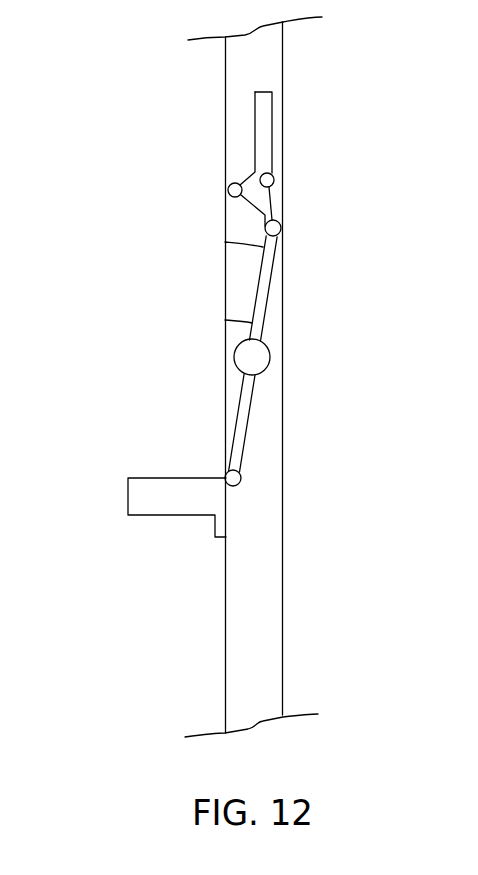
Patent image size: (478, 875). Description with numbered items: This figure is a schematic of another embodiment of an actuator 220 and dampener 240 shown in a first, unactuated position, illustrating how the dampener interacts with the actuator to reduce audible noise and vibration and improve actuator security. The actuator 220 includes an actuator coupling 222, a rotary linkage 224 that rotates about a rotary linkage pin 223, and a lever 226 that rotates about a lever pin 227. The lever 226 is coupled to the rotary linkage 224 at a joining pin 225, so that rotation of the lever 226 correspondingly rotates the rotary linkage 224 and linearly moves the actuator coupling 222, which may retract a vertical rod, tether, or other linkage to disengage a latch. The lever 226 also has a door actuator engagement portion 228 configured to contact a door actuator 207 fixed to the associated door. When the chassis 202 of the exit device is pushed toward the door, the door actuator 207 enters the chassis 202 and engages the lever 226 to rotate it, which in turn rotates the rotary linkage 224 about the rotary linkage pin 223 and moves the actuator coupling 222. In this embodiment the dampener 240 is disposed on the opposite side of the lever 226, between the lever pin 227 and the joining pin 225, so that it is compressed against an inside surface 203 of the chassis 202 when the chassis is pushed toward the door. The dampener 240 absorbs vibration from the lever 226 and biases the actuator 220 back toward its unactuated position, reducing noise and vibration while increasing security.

The chassis 202 is at (257, 675).
The inside surface 203 is at (226, 610).
The door actuator 207 is at (140, 497).
The actuator 220 is at (342, 472).
The actuator coupling 222 is at (265, 110).
The rotary linkage pin 223 is at (235, 190).
The rotary linkage 224 is at (270, 198).
The joining pin 225 is at (273, 229).
The lever 226 is at (258, 292).
The lever pin 227 is at (250, 352).
The door actuator engagement portion 228 is at (225, 470).
The dampener 240 is at (233, 287).